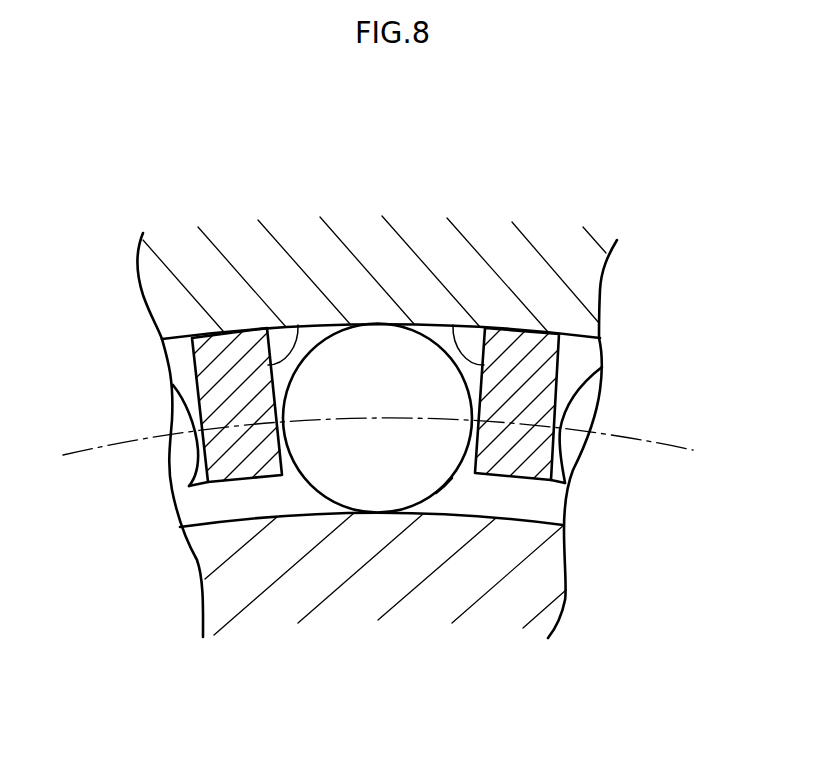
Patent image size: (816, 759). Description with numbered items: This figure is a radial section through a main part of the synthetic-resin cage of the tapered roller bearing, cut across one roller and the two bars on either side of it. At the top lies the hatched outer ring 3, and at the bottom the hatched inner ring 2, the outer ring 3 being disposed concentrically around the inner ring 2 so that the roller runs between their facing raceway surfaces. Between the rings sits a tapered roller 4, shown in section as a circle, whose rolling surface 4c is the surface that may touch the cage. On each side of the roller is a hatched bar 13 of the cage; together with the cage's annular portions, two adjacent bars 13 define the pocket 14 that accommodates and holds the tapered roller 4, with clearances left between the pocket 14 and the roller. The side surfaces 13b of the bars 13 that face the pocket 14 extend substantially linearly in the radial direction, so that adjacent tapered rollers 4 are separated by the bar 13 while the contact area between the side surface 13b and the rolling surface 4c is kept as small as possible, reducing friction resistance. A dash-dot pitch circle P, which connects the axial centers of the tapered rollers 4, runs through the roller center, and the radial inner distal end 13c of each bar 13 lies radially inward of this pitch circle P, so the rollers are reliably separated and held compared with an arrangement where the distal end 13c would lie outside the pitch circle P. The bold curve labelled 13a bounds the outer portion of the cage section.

The inner ring 2 is at (504, 575).
The outer ring 3 is at (583, 253).
The tapered roller 4 is at (382, 480).
The rolling surface 4c is at (442, 490).
The bar 13 is at (245, 357).
The cage outer surface 13a is at (546, 334).
The side surface 13b is at (269, 327).
The radial inner distal end 13c is at (262, 483).
The pocket 14 is at (302, 451).
The pitch circle P is at (118, 443).